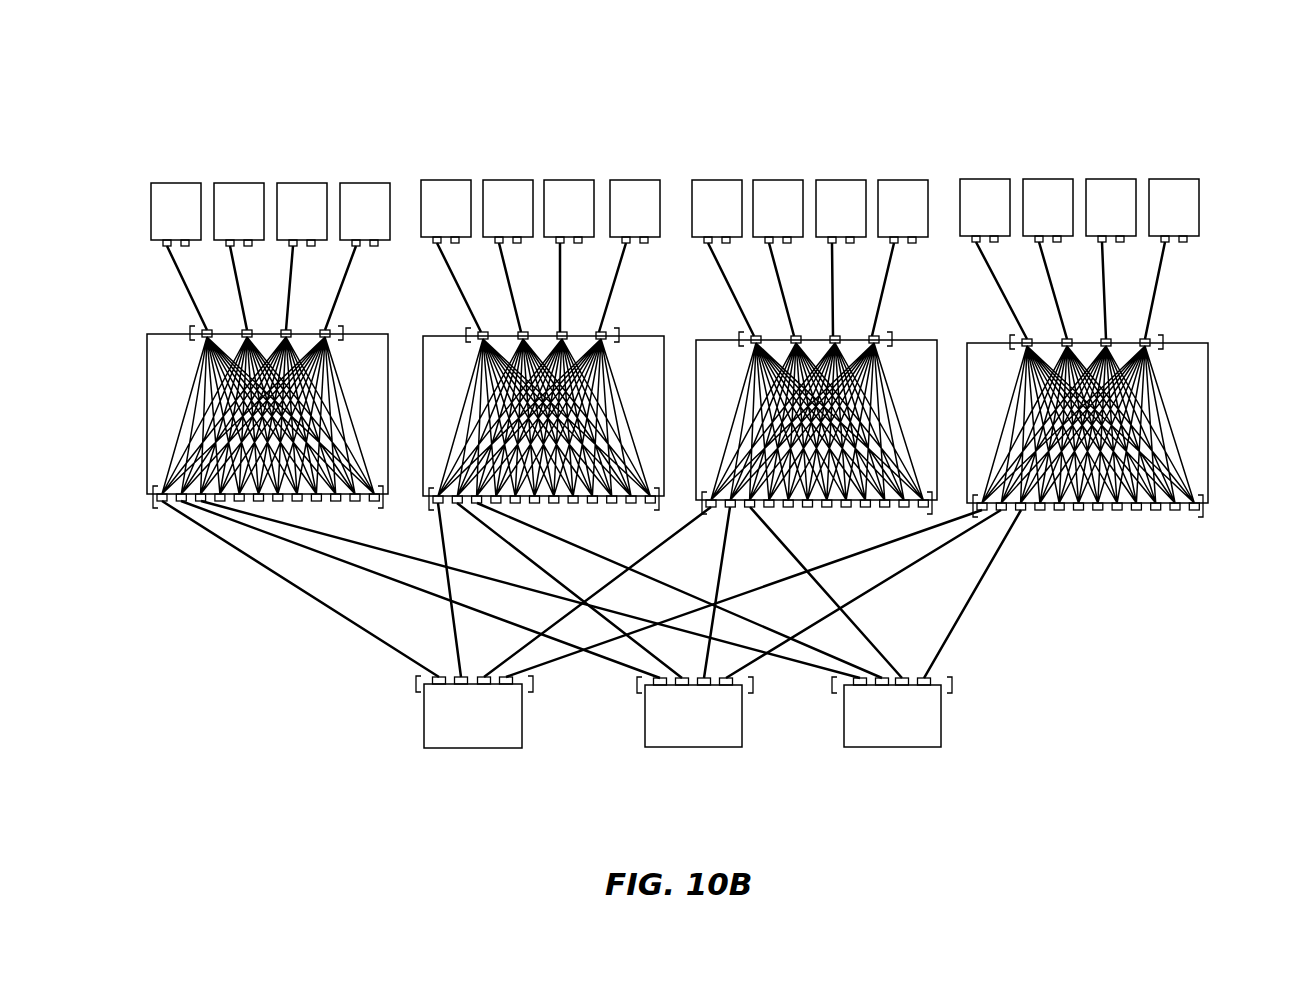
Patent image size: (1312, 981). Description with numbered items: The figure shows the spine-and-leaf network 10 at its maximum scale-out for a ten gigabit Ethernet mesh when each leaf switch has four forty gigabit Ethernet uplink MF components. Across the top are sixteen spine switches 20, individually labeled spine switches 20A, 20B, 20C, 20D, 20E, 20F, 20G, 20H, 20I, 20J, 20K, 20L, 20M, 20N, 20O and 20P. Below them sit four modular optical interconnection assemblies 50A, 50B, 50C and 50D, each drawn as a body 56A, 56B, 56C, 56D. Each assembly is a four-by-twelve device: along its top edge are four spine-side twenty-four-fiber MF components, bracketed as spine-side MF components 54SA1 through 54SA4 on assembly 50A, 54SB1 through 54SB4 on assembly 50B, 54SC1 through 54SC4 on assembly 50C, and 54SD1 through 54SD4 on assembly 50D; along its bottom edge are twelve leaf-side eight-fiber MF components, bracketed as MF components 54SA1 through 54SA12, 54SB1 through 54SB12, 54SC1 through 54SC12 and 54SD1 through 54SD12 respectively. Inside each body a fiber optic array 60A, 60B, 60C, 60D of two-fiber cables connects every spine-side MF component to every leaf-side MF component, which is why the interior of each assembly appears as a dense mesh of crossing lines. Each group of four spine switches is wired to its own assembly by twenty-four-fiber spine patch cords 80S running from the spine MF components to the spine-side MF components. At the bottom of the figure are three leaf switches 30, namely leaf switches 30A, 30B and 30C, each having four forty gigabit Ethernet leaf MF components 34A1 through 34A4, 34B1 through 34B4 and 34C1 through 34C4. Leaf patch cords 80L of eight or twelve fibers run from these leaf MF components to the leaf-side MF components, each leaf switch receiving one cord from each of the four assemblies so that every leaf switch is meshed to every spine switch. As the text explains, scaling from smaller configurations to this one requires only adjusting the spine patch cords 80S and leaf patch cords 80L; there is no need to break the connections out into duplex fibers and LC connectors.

The spine-and-leaf (S/F) network 10 is at (198, 74).
The spine switches 20 is at (149, 165).
The spine switch 20A is at (196, 225).
The spine switch 20B is at (259, 225).
The spine switch 20C is at (322, 225).
The spine switch 20D is at (385, 225).
The spine switch 20E is at (466, 222).
The spine switch 20F is at (528, 222).
The spine switch 20G is at (589, 222).
The spine switch 20H is at (655, 222).
The spine switch 20I is at (733, 222).
The spine switch 20J is at (796, 222).
The spine switch 20K is at (861, 222).
The spine switch 20L is at (921, 222).
The spine switch 20M is at (1007, 221).
The spine switch 20N is at (1068, 221).
The spine switch 20O is at (1132, 221).
The spine switch 20P is at (1193, 221).
The leaf switches 30 is at (970, 718).
The leaf switch 30A is at (492, 729).
The leaf switch 30B is at (713, 730).
The leaf switch 30C is at (912, 730).
The leaf MF component 34A1 is at (339, 735).
The leaf MF component 34A4 is at (416, 685).
The leaf MF component 34B1 is at (563, 736).
The leaf MF component 34B4 is at (636, 686).
The leaf MF component 34C1 is at (753, 738).
The leaf MF component 34C4 is at (832, 685).
The optical interconnection assembly 50A is at (299, 322).
The optical interconnection assembly 50B is at (697, 324).
The optical interconnection assembly 50C is at (970, 328).
The optical interconnection assembly 50D is at (1242, 331).
The spine-side MF component 54SA1 is at (234, 230).
The spine-side MF component 54SA4 is at (347, 328).
The leaf-side MF component 54SA12 is at (153, 507).
The spine-side MF component 54SB1 is at (522, 231).
The spine-side MF component 54SB4 is at (622, 333).
The leaf-side MF component 54SB12 is at (430, 506).
The spine-side MF component 54SC1 is at (788, 233).
The spine-side MF component 54SC4 is at (895, 337).
The leaf-side MF component 54SC12 is at (932, 506).
The spine-side MF component 54SD1 is at (1067, 234).
The spine-side MF component 54SD4 is at (1165, 340).
The leaf-side MF component 54SD12 is at (1270, 585).
The optical interconnection assembly body 56A is at (267, 415).
The optical interconnection assembly body 56B is at (543, 417).
The optical interconnection assembly body 56C is at (816, 421).
The optical interconnection assembly body 56D is at (1087, 424).
The fiber optic array 60A is at (263, 415).
The fiber optic array 60B is at (539, 417).
The fiber optic array 60C is at (812, 421).
The fiber optic array 60D is at (1083, 424).
The spine patch cords 80S is at (180, 292).
The leaf patch cords 80L is at (343, 639).